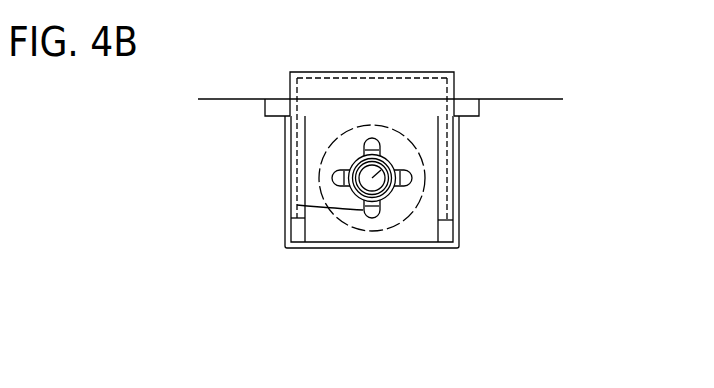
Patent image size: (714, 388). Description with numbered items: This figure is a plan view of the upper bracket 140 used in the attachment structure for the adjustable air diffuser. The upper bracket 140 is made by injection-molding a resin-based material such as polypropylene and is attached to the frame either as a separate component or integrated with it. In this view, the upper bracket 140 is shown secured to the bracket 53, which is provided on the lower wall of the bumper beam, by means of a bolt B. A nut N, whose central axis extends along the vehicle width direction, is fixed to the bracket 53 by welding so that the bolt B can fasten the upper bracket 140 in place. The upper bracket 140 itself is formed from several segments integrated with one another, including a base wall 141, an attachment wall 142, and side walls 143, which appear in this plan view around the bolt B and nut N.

The upper bracket 140 is at (473, 90).
The base wall 141 is at (230, 130).
The attachment wall 142 is at (330, 230).
The side walls 143 is at (383, 221).
The bracket 53 is at (294, 86).
The nut N is at (341, 173).
The bolt B is at (398, 162).